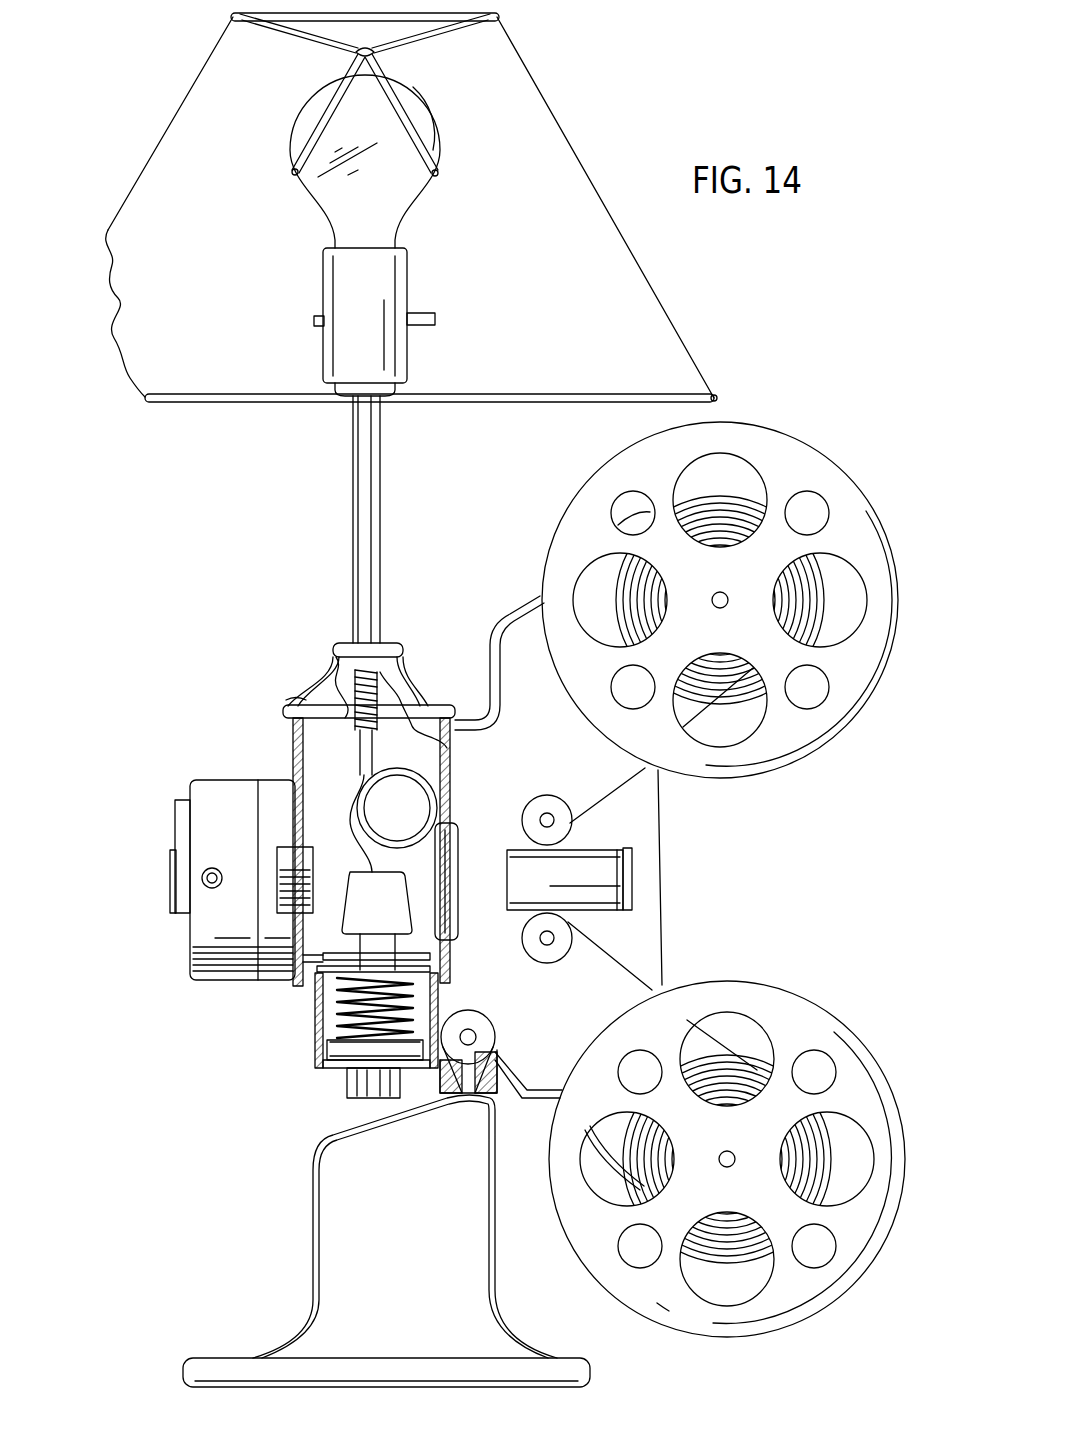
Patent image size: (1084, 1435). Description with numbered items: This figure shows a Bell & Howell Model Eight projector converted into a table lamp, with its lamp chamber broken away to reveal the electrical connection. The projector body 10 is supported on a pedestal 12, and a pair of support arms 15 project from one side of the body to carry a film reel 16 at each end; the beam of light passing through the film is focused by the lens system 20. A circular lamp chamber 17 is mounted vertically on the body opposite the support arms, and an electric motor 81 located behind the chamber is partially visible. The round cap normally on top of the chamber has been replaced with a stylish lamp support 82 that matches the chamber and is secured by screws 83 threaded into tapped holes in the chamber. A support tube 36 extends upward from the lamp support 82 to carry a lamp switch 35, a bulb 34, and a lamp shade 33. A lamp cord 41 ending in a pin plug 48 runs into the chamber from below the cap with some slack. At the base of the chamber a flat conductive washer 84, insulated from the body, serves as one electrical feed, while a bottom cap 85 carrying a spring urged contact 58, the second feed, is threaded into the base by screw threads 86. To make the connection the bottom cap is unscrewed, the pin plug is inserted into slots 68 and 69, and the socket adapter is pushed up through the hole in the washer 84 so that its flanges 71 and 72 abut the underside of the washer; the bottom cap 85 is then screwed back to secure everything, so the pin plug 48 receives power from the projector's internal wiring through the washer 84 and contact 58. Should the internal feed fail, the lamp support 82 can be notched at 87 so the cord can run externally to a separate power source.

The projector body 10 is at (725, 896).
The pedestal 12 is at (240, 1358).
The support arms 15 is at (520, 605).
The film reel 16 is at (584, 482).
The lamp chamber 17 is at (282, 747).
The lens system 20 is at (608, 858).
The lamp shade 33 is at (680, 327).
The bulb 34 is at (436, 124).
The lamp switch 35 is at (323, 294).
The support tube 36 is at (353, 515).
The lamp cord 41 is at (366, 792).
The pin plug 48 is at (390, 898).
The spring urged contact 58 is at (378, 1080).
The slot 68 is at (317, 978).
The slot 69 is at (440, 948).
The flange 71 is at (320, 998).
The flange 72 is at (440, 993).
The electric motor 81 is at (205, 780).
The lamp support 82 is at (398, 650).
The screws 83 is at (305, 698).
The flat conductive washer 84 is at (322, 962).
The bottom cap 85 is at (345, 1075).
The screw threads 86 is at (325, 1052).
The notch 87 is at (415, 700).